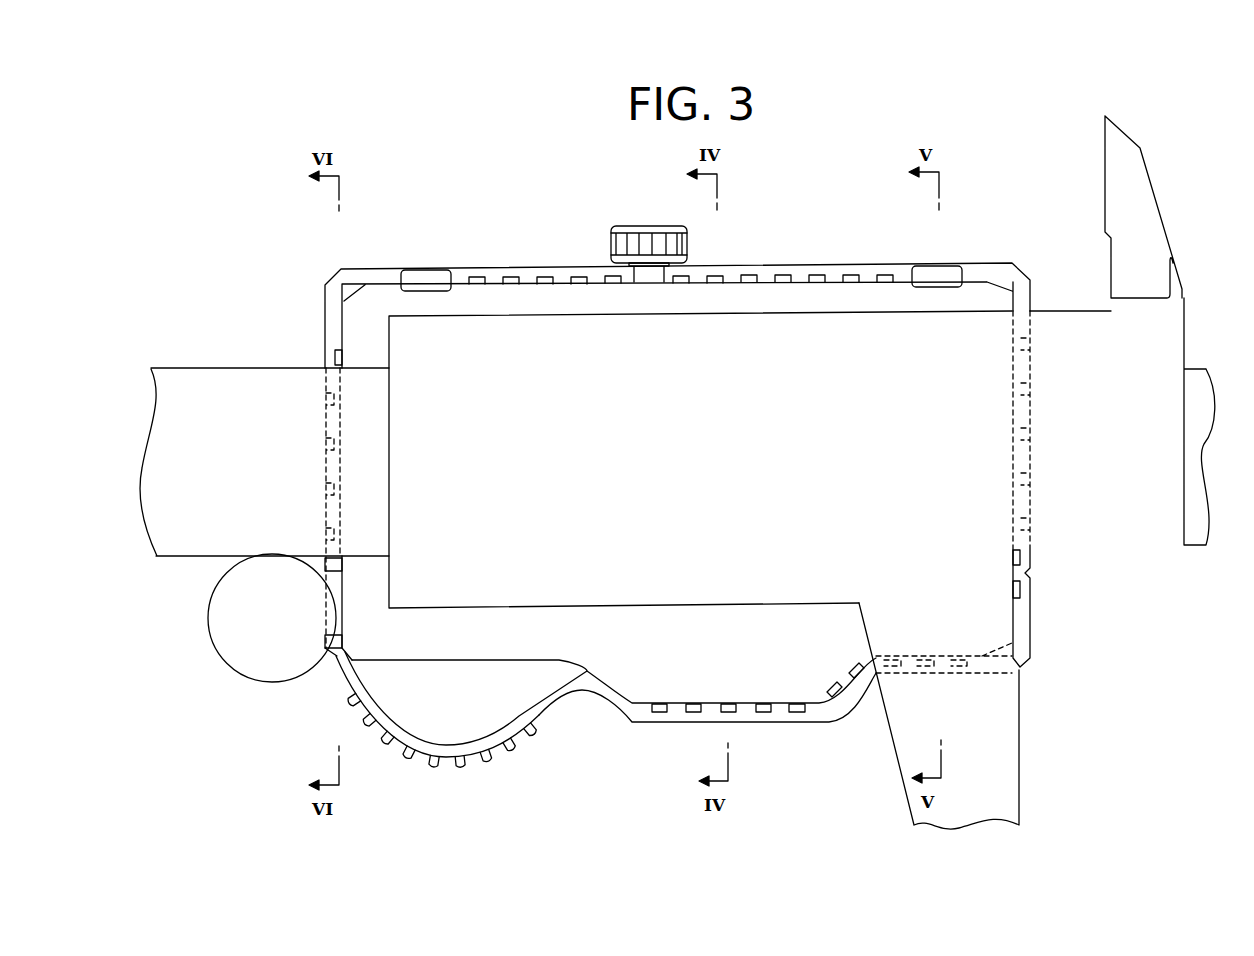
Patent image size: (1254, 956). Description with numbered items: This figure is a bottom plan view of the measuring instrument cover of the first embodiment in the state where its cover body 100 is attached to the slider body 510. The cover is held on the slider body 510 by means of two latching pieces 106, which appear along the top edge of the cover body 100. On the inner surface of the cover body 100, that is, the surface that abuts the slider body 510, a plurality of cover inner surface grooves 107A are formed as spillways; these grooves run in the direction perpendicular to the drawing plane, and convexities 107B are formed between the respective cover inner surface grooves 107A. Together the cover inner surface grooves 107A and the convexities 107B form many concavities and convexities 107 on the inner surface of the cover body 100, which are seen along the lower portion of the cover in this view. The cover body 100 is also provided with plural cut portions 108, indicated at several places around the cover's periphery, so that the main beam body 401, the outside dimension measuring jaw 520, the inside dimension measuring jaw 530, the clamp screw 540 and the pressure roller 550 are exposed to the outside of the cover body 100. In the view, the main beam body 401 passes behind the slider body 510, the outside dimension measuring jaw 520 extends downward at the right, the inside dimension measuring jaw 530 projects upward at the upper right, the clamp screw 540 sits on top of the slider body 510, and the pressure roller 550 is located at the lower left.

The cover body 100 is at (808, 212).
The latching piece 106 is at (428, 283).
The concavities and convexities 107 is at (614, 757).
The cover inner surface groove 107A is at (650, 708).
The convexity 107B is at (680, 706).
The cut portion 108 is at (657, 284).
The main beam body 401 is at (1198, 549).
The slider body 510 is at (530, 300).
The outside dimension measuring jaw 520 is at (1021, 782).
The inside dimension measuring jaw 530 is at (1128, 132).
The clamp screw 540 is at (638, 228).
The pressure roller 550 is at (218, 658).